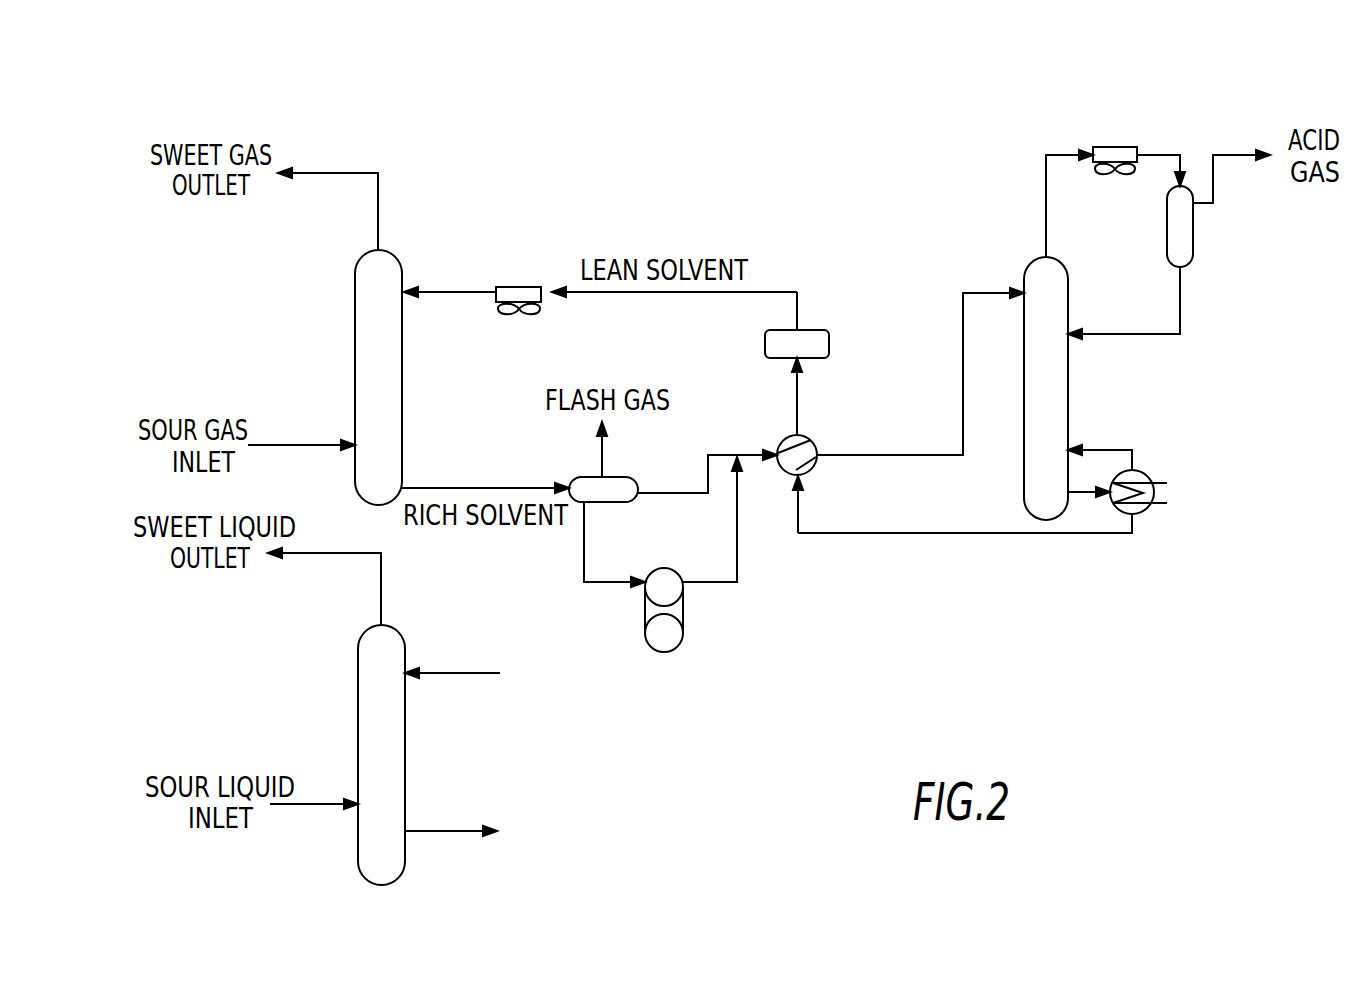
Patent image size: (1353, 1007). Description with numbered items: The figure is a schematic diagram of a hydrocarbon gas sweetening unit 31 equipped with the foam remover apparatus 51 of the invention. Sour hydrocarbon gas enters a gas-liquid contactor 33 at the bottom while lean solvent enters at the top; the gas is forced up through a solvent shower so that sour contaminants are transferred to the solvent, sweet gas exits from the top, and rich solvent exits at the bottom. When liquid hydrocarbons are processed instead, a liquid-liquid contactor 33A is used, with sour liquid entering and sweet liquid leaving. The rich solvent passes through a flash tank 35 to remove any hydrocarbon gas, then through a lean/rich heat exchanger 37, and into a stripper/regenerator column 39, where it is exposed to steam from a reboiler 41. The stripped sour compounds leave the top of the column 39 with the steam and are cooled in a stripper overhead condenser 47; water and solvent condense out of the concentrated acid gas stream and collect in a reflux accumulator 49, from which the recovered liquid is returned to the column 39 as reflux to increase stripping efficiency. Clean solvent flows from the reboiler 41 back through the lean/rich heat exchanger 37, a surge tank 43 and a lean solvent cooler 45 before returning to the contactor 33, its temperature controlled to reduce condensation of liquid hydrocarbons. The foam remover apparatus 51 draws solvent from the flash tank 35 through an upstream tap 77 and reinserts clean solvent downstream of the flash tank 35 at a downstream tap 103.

The sweetening unit 31 is at (357, 120).
The gas-liquid contactor 33 is at (355, 292).
The liquid-liquid contactor 33A is at (358, 718).
The flash tank 35 is at (578, 477).
The lean/rich heat exchanger 37 is at (808, 437).
The stripper/regenerator column 39 is at (1075, 385).
The reboiler 41 is at (1140, 472).
The surge tank 43 is at (818, 330).
The lean solvent cooler 45 is at (518, 287).
The stripper overhead condenser 47 is at (1135, 147).
The reflux accumulator 49 is at (1193, 232).
The foam remover apparatus 51 is at (646, 637).
The upstream tap 77 is at (584, 560).
The downstream tap 103 is at (742, 518).